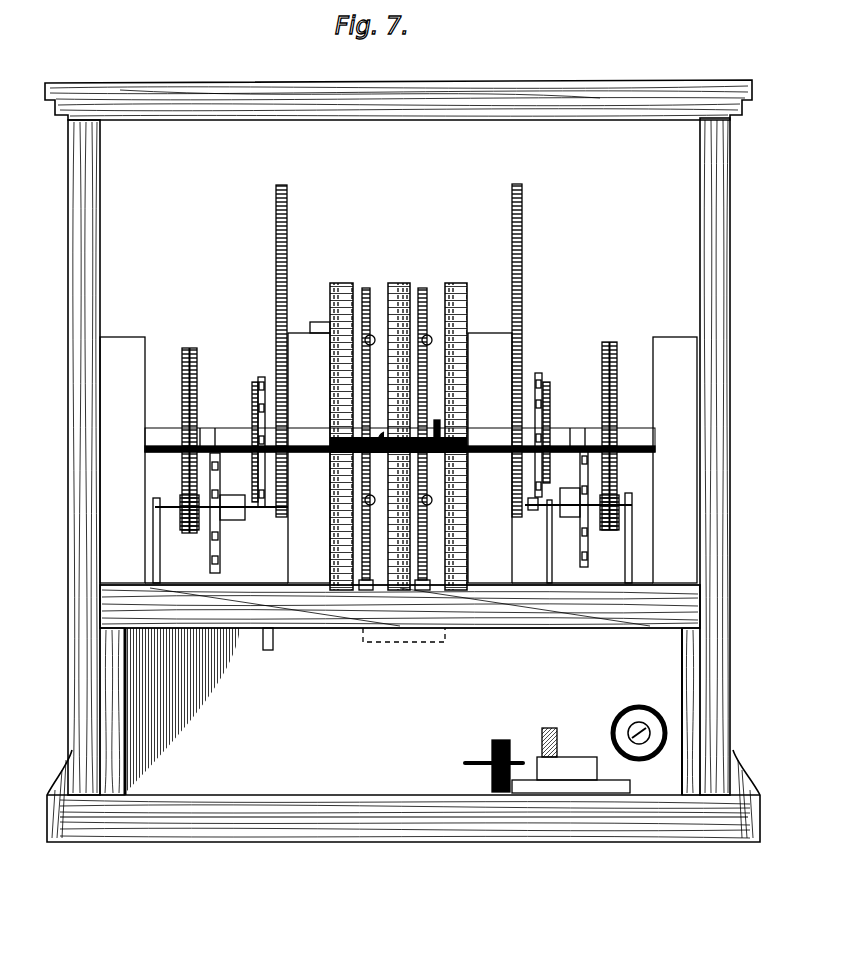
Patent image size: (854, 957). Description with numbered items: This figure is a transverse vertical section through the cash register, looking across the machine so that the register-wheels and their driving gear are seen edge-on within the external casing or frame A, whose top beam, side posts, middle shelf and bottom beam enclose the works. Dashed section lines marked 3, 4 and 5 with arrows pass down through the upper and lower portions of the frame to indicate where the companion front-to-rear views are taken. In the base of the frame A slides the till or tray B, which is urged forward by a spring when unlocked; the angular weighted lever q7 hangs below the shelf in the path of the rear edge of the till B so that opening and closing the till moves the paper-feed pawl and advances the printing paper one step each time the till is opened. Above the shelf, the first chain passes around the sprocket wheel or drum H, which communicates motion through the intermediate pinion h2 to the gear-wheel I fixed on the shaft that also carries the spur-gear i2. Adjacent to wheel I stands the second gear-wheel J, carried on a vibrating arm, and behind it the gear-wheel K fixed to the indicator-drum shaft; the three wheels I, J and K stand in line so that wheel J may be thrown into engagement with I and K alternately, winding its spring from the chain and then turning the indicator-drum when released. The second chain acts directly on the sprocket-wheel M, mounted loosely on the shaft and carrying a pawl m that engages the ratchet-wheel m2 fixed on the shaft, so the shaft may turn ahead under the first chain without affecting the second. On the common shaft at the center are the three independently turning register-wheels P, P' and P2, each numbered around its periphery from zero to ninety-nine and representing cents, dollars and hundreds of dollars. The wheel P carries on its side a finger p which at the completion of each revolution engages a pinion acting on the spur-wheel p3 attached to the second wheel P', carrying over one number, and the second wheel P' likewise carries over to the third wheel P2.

The external casing or frame A is at (394, 461).
The till or tray B is at (400, 711).
The binding post device D is at (613, 733).
The sprocket wheel or drum H is at (580, 550).
The gear-wheel K is at (287, 228).
The second gear-wheel J is at (276, 307).
The gear-wheel I is at (276, 369).
The spur-gear i2 is at (182, 393).
The intermediate pinion h2 is at (181, 500).
The pawl m is at (258, 393).
The ratchet-wheel m2 is at (252, 410).
The sprocket-wheel M is at (256, 520).
The register-wheel P is at (465, 436).
The register-wheel P' is at (387, 431).
The register-wheel P2 is at (326, 436).
The finger p is at (438, 458).
The spur-wheel p3 is at (370, 528).
The angular weighted lever q7 is at (275, 645).
The section line 3 3 is at (617, 205).
The section line 4 4 is at (582, 215).
The section line 5 5 is at (444, 200).